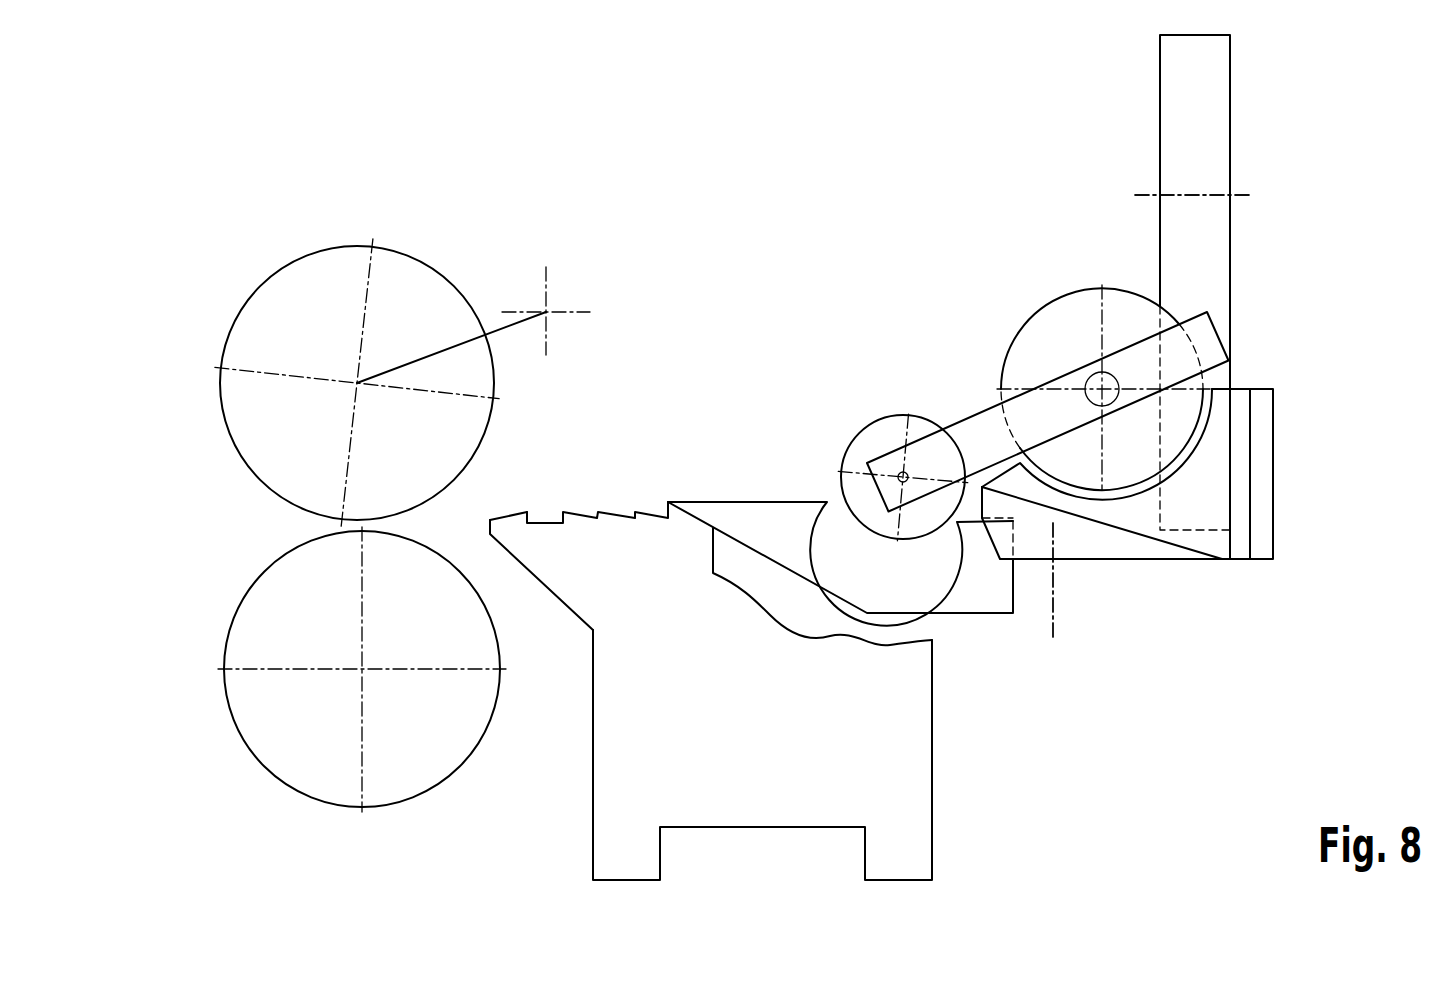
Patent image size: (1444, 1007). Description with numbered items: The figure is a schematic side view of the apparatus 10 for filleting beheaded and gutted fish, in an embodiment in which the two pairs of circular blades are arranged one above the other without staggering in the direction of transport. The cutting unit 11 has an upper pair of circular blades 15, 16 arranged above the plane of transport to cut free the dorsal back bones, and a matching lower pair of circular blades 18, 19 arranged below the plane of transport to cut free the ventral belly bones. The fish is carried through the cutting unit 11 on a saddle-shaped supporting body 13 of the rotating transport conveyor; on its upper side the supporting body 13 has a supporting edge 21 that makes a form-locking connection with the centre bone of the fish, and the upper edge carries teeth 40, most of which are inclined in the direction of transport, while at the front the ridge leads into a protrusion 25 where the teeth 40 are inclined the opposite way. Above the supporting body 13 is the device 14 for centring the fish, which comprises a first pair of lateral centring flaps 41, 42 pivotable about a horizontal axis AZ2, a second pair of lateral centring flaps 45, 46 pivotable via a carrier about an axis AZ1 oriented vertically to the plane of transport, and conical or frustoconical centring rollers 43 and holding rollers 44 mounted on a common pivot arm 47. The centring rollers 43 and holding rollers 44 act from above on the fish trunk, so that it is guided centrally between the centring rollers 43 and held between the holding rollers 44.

The apparatus 10 is at (838, 182).
The cutting unit 11 is at (242, 257).
The supporting body 13 is at (905, 805).
The device for centring the fish 14 is at (983, 311).
The circular blade 15 is at (317, 384).
The circular blade 16 is at (228, 411).
The circular blade 18 is at (362, 690).
The circular blade 19 is at (413, 778).
The supporting edge 21 is at (576, 491).
The protrusion 25 is at (527, 546).
The teeth 40 is at (639, 512).
The lateral centring flap 41 is at (1297, 474).
The lateral centring flap 42 is at (1265, 478).
The centring roller 43 is at (1064, 308).
The holding roller 44 is at (878, 432).
The lateral centring flap 45 is at (940, 536).
The lateral centring flap 46 is at (986, 604).
The pivot arm 47 is at (975, 425).
The axis AZ1 is at (1053, 622).
The horizontal axis AZ2 is at (1245, 195).